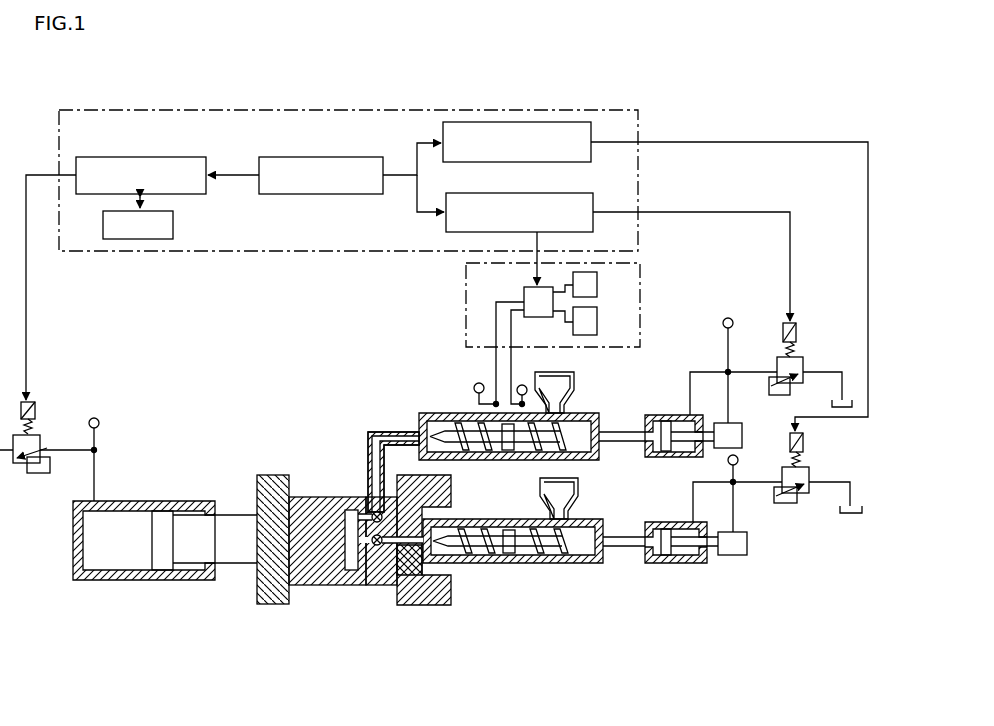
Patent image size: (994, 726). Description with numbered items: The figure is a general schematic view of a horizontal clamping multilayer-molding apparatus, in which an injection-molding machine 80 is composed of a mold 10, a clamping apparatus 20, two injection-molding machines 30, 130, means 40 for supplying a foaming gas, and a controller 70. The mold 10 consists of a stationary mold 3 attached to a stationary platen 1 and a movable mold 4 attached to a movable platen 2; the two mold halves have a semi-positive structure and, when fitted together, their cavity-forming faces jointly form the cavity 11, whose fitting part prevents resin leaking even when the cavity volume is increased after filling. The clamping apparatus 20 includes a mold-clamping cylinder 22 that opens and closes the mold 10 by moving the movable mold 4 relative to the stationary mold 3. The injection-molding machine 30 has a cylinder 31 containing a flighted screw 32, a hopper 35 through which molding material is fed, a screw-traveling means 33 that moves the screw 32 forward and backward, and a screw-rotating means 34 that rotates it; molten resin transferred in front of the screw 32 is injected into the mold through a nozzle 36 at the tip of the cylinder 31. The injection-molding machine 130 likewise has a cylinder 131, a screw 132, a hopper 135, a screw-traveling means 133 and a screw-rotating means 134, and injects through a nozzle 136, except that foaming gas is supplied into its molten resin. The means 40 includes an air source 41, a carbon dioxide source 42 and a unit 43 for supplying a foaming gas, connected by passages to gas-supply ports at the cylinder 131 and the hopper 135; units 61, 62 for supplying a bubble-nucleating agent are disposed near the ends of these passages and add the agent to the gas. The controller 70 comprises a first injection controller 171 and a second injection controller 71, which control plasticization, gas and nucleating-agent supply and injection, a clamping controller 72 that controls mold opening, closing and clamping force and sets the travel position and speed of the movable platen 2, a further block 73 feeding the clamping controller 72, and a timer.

The stationary platen 1 is at (418, 605).
The movable platen 2 is at (262, 604).
The stationary mold 3 is at (386, 585).
The movable mold 4 is at (305, 585).
The mold 10 is at (362, 583).
The cavity 11 is at (352, 512).
The clamping apparatus 20 is at (128, 545).
The mold-clamping cylinder 22 is at (100, 580).
The injection-molding machine 30 is at (642, 561).
The cylinder 31 is at (488, 563).
The screw 32 is at (543, 552).
The screw-traveling means 33 is at (677, 563).
The screw-rotating means 34 is at (735, 555).
The hopper 35 is at (580, 490).
The nozzle 36 is at (413, 553).
The means for supplying a foaming gas 40 is at (580, 300).
The air source 41 is at (597, 283).
The carbon dioxide source 42 is at (597, 322).
The unit for supplying a foaming gas 43 is at (524, 292).
The unit for supplying a bubble-nucleating agent 61 is at (477, 383).
The unit for supplying a bubble-nucleating agent 62 is at (522, 385).
The controller 70 is at (381, 162).
The second injection controller 71 is at (515, 130).
The clamping controller 72 is at (149, 165).
The setting unit 73 is at (314, 165).
The injection-molding machine 80 is at (398, 666).
The injection-molding machine 130 is at (601, 415).
The cylinder 131 is at (478, 460).
The screw 132 is at (530, 450).
The screw-traveling means 133 is at (666, 457).
The screw-rotating means 134 is at (742, 434).
The hopper 135 is at (574, 378).
The nozzle 136 is at (400, 432).
The first injection controller 171 is at (587, 198).